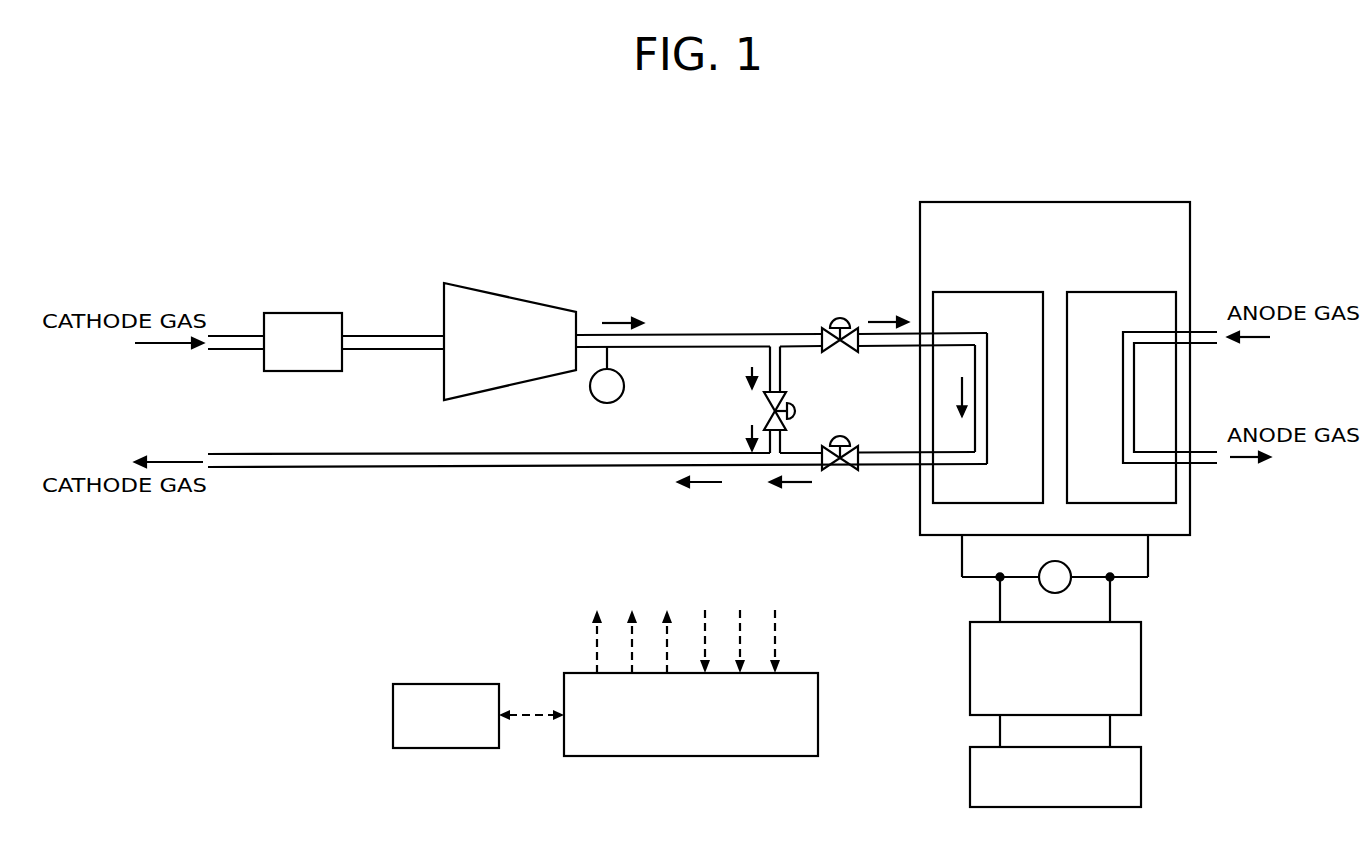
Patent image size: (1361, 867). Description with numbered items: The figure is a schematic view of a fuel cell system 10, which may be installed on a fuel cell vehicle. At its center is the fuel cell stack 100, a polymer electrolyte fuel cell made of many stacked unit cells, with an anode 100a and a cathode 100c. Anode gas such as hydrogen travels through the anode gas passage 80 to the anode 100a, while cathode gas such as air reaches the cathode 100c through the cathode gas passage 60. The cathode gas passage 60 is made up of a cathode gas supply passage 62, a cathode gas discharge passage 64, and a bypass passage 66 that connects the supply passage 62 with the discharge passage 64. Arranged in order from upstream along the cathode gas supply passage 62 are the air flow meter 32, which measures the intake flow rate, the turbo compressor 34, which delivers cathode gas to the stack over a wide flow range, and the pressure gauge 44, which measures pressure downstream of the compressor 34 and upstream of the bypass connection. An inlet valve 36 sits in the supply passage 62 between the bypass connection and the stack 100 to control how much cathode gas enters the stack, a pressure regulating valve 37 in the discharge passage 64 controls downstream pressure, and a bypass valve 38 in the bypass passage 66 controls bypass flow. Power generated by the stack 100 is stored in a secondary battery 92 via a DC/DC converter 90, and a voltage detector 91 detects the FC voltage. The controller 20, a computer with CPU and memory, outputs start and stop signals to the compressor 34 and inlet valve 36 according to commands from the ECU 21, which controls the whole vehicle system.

The fuel cell system 10 is at (1210, 168).
The controller 20 is at (813, 673).
The electronic control unit (ECU) 21 is at (482, 684).
The air flow meter 32 is at (342, 313).
The turbo compressor 34 is at (470, 290).
The inlet valve 36 is at (838, 318).
The pressure regulating valve 37 is at (844, 437).
The bypass valve 38 is at (794, 402).
The pressure gauge 44 is at (607, 403).
The cathode gas passage 60 is at (770, 248).
The cathode gas supply passage 62 is at (697, 333).
The cathode gas discharge passage 64 is at (643, 453).
The bypass passage 66 is at (770, 357).
The anode gas passage 80 is at (1123, 395).
The DC/DC converter 90 is at (1141, 667).
The voltage detector 91 is at (1067, 566).
The secondary battery 92 is at (1141, 775).
The fuel cell stack 100 is at (957, 202).
The anode 100a is at (1112, 292).
The cathode 100c is at (997, 292).